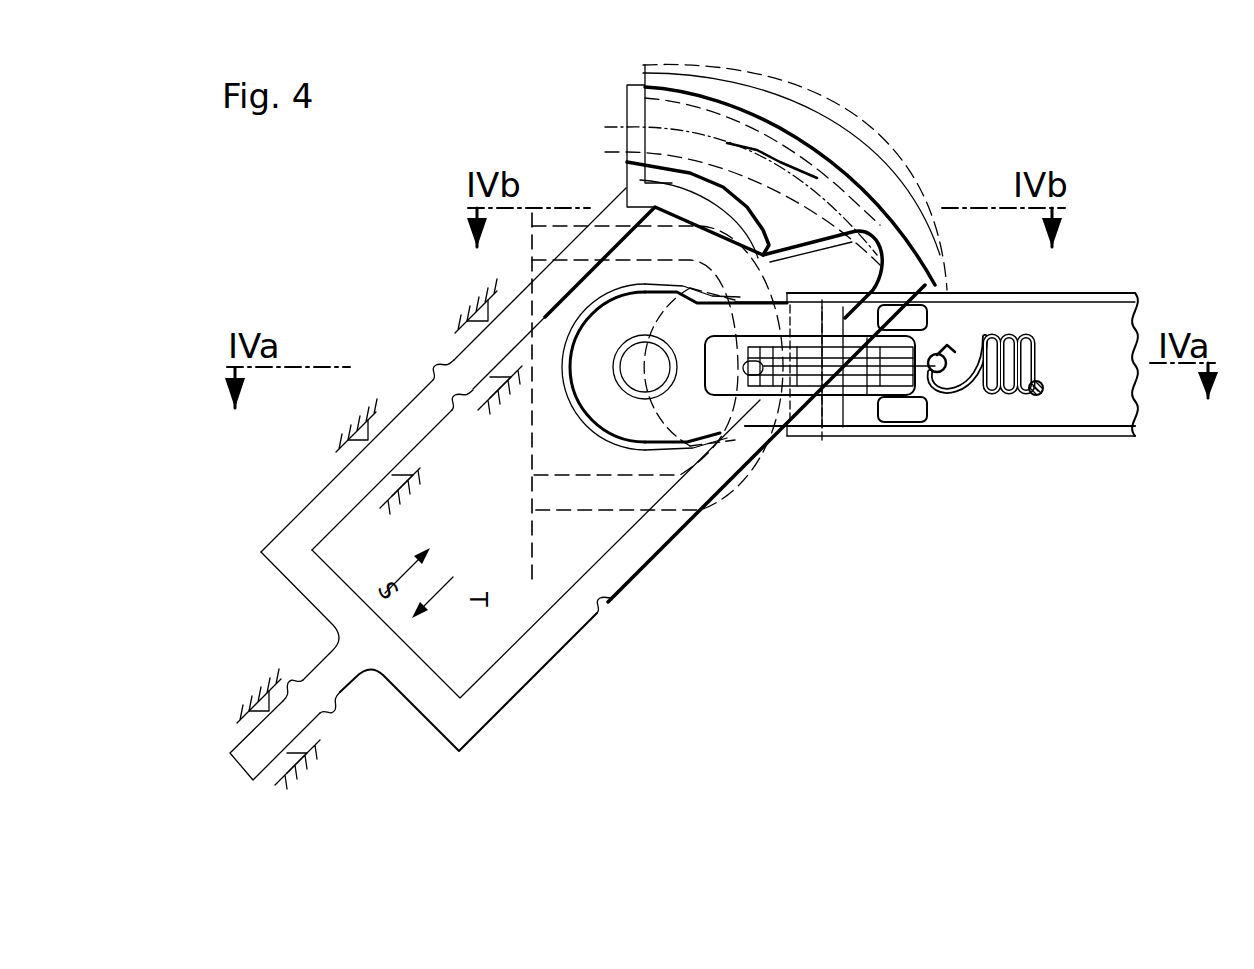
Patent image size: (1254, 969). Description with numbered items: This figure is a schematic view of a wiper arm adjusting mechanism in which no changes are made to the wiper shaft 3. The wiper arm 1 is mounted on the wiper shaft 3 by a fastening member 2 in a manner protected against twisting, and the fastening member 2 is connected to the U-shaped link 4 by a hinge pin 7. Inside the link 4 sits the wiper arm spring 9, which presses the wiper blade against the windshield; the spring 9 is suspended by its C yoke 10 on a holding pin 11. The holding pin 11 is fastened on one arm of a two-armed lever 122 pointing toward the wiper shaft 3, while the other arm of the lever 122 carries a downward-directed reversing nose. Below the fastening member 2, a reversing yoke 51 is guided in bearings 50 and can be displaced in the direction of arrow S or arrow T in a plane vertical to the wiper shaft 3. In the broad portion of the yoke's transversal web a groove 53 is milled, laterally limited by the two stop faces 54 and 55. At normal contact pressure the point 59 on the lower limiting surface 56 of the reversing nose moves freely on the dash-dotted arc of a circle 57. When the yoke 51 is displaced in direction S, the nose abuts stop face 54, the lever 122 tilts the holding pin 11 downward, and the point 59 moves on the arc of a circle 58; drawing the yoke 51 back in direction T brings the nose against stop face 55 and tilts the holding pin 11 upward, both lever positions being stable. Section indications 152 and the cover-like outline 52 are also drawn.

The wiper arm 1 is at (1052, 451).
The fastening member 2 is at (930, 430).
The wiper shaft 3 is at (657, 378).
The link 4 is at (1100, 292).
The hinge pin 7 is at (832, 430).
The wiper arm spring 9 is at (1043, 388).
The C yoke 10 is at (943, 356).
The holding pin 11 is at (748, 455).
The bearings 50 is at (333, 458).
The yoke 51 is at (325, 505).
The cover 52 is at (803, 156).
The groove 53 is at (820, 200).
The stop face 54 is at (657, 128).
The stop face 55 is at (893, 170).
The lower limiting surface 56 is at (882, 436).
The arc of a circle 57 is at (760, 138).
The arc of a circle 58 is at (700, 136).
The point 59 is at (848, 420).
The two-armed lever 122 is at (798, 442).
The frame arm inner edge 152 is at (410, 351).